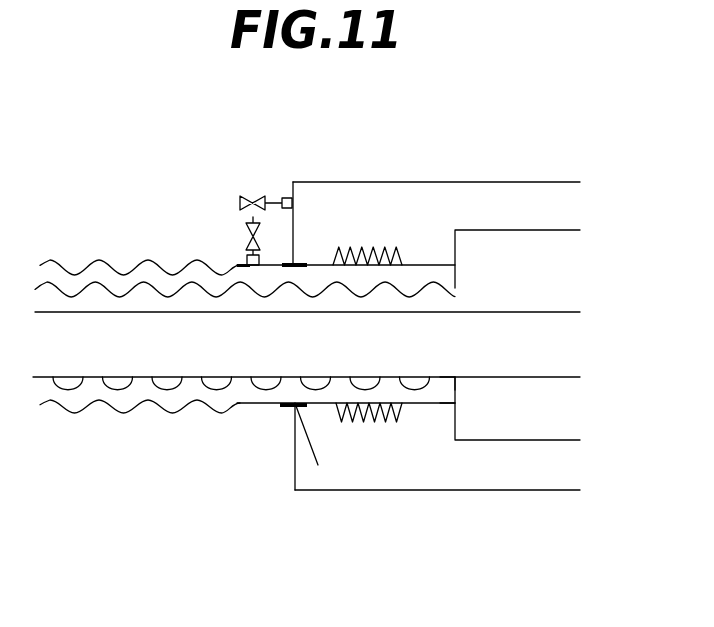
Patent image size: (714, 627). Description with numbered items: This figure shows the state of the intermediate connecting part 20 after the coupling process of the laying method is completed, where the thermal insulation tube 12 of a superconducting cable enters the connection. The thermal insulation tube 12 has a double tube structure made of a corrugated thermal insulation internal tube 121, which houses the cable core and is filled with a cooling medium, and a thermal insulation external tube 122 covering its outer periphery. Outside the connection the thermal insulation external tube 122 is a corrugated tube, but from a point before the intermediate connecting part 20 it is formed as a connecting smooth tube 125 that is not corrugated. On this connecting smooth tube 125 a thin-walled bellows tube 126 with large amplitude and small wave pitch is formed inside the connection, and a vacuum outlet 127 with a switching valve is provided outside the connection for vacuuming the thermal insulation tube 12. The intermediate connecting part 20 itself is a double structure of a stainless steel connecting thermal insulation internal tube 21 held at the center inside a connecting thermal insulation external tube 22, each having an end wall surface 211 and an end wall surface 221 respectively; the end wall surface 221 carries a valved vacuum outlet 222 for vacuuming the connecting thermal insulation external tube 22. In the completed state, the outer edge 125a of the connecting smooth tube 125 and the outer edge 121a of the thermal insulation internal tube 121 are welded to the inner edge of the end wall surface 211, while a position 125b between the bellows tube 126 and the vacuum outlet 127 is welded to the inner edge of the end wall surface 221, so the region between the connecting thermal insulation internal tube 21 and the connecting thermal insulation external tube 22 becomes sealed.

The thermal insulation tube 12 is at (245, 275).
The thermal insulation internal tube 121 is at (183, 177).
The outer edge of the front end part of the thermal insulation internal tube 121a is at (457, 381).
The thermal insulation external tube 122 is at (150, 258).
The connecting smooth tube 125 is at (413, 405).
The outer edge of the front end part of the connecting smooth tube 125a is at (457, 405).
The position between the bellows tube and the vacuum outlet 125b is at (318, 465).
The bellows tube 126 is at (363, 422).
The vacuum outlet 127 is at (247, 252).
The intermediate connecting part 20 is at (557, 565).
The connecting thermal insulation internal tube 21 is at (507, 442).
The connecting thermal insulation external tube 22 is at (432, 492).
The end wall surface of the connecting thermal insulation internal tube 211 is at (452, 248).
The end wall surface of the connecting thermal insulation external tube 221 is at (293, 440).
The vacuum outlet 222 is at (272, 202).